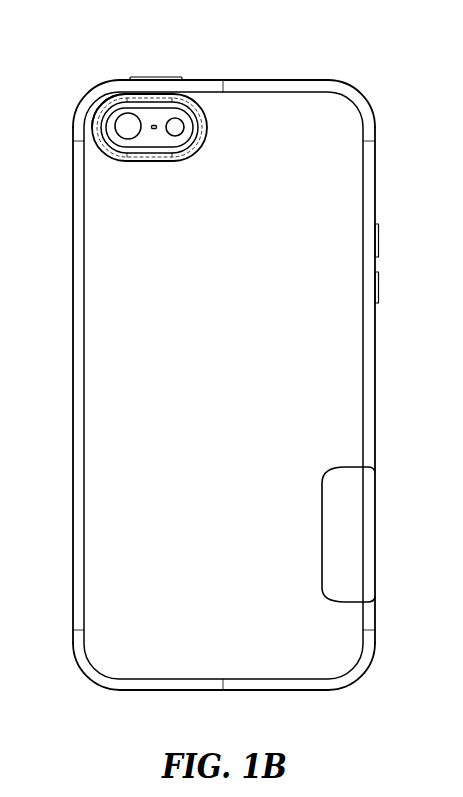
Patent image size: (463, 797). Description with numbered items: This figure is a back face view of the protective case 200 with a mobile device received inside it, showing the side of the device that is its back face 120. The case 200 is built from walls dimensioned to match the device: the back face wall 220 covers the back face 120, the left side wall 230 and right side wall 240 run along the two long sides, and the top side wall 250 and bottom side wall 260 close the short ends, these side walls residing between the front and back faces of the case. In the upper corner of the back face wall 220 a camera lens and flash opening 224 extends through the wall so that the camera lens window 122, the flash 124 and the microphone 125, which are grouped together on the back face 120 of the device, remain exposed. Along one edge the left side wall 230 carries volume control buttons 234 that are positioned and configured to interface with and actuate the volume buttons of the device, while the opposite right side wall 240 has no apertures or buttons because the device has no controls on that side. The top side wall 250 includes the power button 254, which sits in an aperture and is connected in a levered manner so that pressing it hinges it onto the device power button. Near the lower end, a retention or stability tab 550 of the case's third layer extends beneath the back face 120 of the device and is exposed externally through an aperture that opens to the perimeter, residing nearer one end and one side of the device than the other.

The back face 120 is at (158, 118).
The camera lens window 122 is at (127, 118).
The flash 124 is at (177, 127).
The microphone 125 is at (154, 134).
The protective case 200 is at (222, 374).
The back face wall 220 is at (292, 427).
The camera lens and flash opening 224 is at (108, 132).
The left side wall 230 is at (377, 403).
The volume control buttons 234 is at (379, 243).
The right side wall 240 is at (73, 502).
The top side wall 250 is at (268, 80).
The power button 254 is at (157, 77).
The bottom side wall 260 is at (151, 690).
The retention tab 550 is at (337, 537).